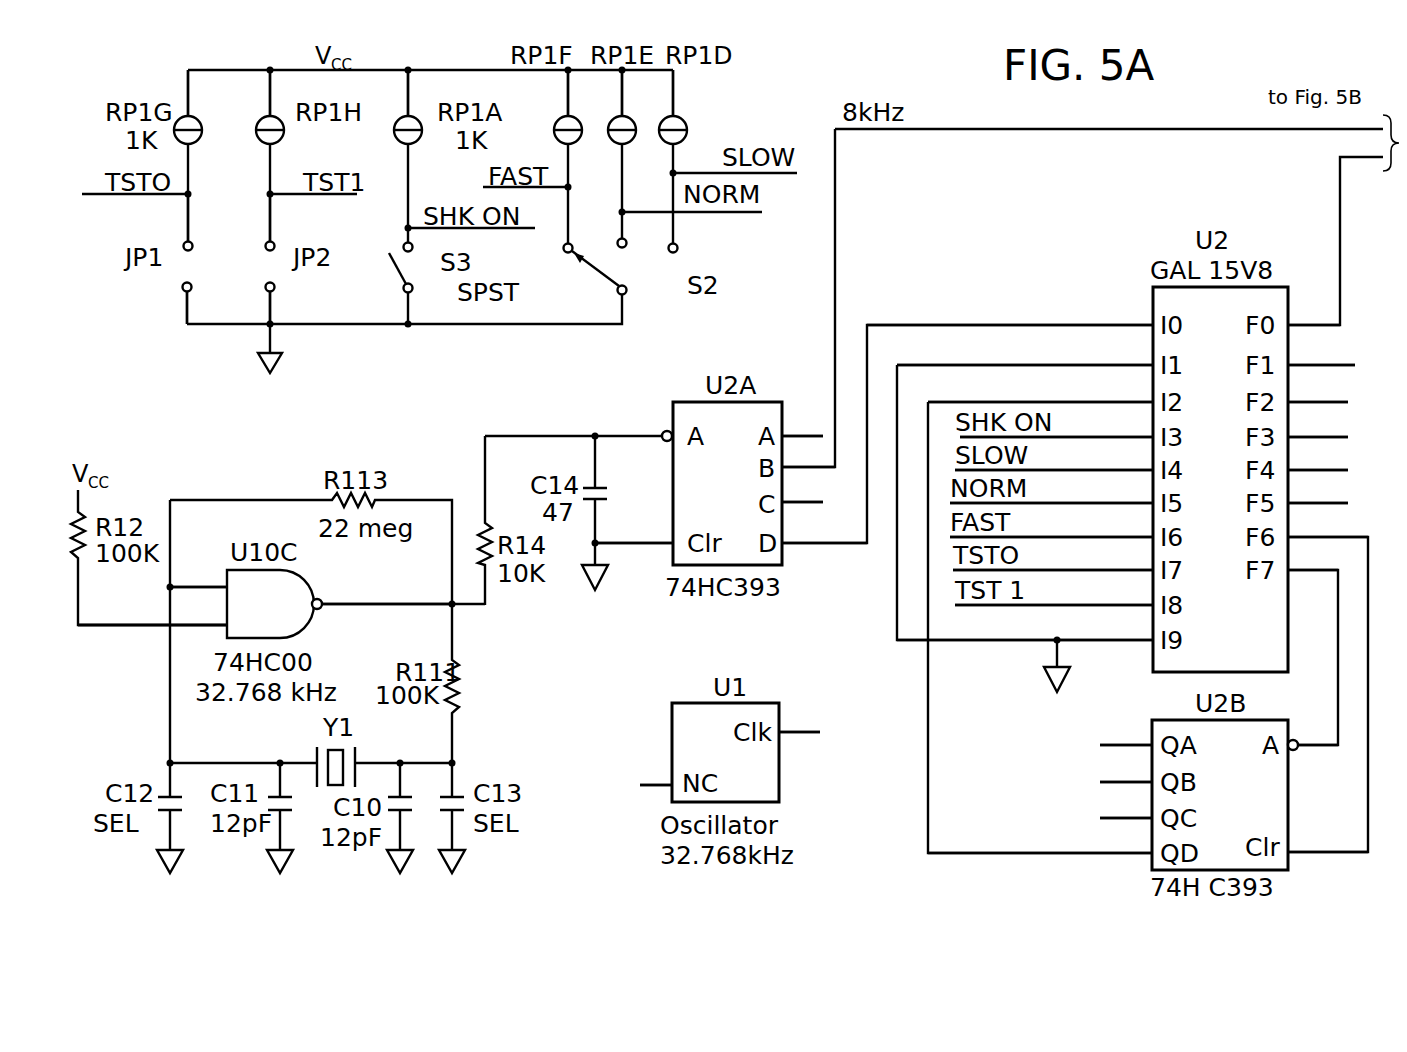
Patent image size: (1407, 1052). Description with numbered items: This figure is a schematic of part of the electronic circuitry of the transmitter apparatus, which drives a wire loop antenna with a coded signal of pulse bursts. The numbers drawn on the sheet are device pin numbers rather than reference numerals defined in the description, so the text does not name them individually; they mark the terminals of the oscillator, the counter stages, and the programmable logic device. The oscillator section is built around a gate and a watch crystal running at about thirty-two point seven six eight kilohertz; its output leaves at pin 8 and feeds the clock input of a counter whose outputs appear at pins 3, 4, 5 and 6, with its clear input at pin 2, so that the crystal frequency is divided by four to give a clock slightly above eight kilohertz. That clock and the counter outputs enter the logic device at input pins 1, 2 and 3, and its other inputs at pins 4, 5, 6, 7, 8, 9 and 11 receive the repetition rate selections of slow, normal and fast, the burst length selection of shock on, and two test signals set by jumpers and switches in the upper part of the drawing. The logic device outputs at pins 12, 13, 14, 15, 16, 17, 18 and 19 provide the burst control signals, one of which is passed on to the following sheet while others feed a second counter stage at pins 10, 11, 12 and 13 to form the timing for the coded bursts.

The pin 1 is at (665, 432).
The pin 2 is at (665, 494).
The pin 3 is at (917, 330).
The pin 4 is at (892, 380).
The pin 5 is at (919, 324).
The pin 6 is at (893, 344).
The pin 7 is at (866, 341).
The pin 8 is at (676, 499).
The pin 9 is at (615, 482).
The pin 10 is at (661, 672).
The pin 11 is at (1025, 677).
The pin 12 is at (1328, 574).
The pin 13 is at (1321, 540).
The pin 14 is at (1318, 388).
The pin 15 is at (1318, 423).
The pin 16 is at (1318, 456).
The pin 17 is at (1318, 489).
The pin 18 is at (1328, 523).
The pin 19 is at (1313, 556).